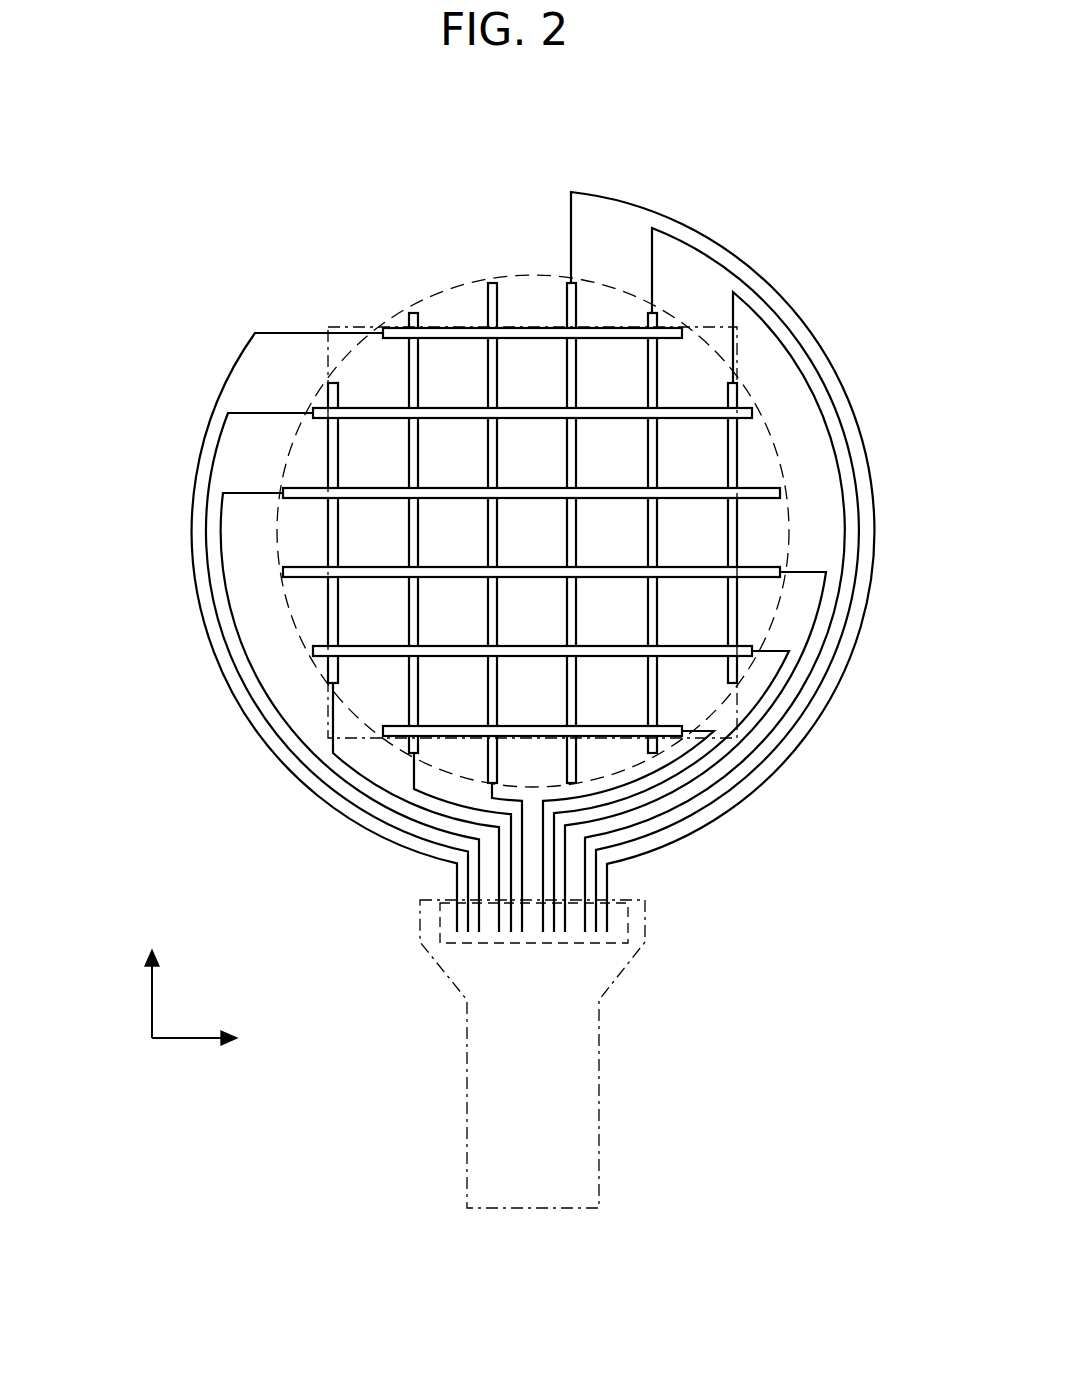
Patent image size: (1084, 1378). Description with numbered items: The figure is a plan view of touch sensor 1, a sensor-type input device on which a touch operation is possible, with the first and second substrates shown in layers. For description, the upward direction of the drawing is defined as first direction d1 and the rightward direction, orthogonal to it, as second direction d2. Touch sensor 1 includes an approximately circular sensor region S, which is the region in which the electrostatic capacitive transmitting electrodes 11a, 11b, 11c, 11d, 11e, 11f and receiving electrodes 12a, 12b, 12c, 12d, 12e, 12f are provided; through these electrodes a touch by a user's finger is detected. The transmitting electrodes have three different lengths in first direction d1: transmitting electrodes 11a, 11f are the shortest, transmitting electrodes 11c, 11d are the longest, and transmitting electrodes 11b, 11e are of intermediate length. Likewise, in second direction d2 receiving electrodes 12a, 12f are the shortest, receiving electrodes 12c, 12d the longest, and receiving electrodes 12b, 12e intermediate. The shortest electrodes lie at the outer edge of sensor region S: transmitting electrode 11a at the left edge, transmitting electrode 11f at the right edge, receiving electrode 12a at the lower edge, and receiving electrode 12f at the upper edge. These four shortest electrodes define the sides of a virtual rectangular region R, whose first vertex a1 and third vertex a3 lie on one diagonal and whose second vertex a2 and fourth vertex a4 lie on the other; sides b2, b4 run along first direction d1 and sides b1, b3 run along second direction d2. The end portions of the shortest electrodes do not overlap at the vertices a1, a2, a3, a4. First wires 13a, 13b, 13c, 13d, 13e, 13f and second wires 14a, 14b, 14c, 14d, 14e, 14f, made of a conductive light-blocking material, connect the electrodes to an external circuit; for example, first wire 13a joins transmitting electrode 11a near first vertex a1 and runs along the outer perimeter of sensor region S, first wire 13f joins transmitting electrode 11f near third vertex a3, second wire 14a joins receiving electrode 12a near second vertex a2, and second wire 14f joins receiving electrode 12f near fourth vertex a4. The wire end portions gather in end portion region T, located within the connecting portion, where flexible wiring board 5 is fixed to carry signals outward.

The touch sensor 1 is at (258, 175).
The flexible wiring board 5 is at (600, 1100).
The rectangular region R is at (341, 325).
The sensor region S is at (556, 275).
The end portion region T is at (628, 930).
The transmitting electrode 11a is at (333, 381).
The transmitting electrode 11b is at (414, 321).
The transmitting electrode 11c is at (497, 300).
The transmitting electrode 11d is at (577, 300).
The transmitting electrode 11e is at (657, 320).
The transmitting electrode 11f is at (740, 392).
The receiving electrode 12a is at (600, 726).
The receiving electrode 12b is at (600, 646).
The receiving electrode 12c is at (600, 567).
The receiving electrode 12d is at (600, 488).
The receiving electrode 12e is at (600, 408).
The receiving electrode 12f is at (672, 340).
The first wire 13a is at (377, 788).
The first wire 13b is at (423, 793).
The first wire 13c is at (518, 907).
The first wire 13d is at (598, 196).
The first wire 13e is at (676, 239).
The first wire 13f is at (745, 303).
The second wire 14a is at (723, 758).
The second wire 14b is at (695, 763).
The second wire 14c is at (668, 765).
The second wire 14d is at (225, 590).
The second wire 14e is at (207, 542).
The second wire 14f is at (193, 497).
The first vertex a1 is at (328, 738).
The second vertex a2 is at (737, 738).
The third vertex a3 is at (738, 328).
The fourth vertex a4 is at (328, 328).
The side b1 is at (340, 740).
The side b2 is at (737, 455).
The side b3 is at (358, 326).
The side b4 is at (328, 455).
The first direction d1 is at (150, 1018).
The second direction d2 is at (183, 1047).